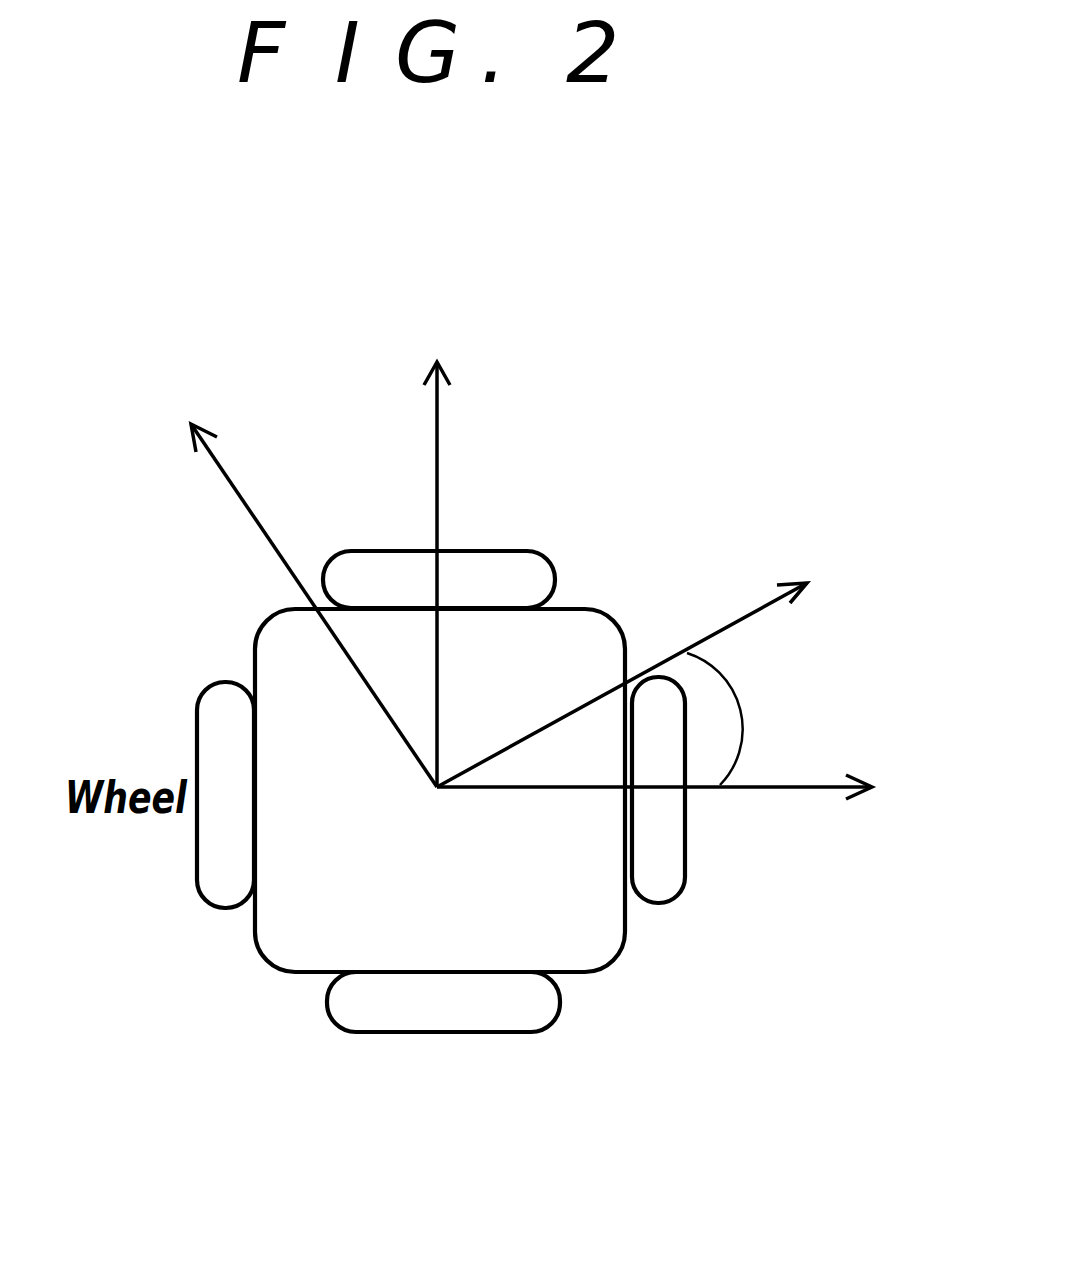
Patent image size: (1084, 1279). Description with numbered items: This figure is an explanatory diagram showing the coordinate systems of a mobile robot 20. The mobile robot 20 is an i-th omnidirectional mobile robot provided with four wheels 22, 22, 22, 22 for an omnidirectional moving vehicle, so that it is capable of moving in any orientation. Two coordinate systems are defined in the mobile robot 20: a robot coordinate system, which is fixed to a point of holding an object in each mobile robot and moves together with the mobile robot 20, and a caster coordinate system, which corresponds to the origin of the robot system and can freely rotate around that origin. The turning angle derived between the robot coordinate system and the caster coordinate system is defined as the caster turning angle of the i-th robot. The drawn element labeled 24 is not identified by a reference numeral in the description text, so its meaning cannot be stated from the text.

The mobile robot 20 is at (630, 595).
The wheel 22 is at (515, 552).
The coordinate frames 24 is at (549, 599).